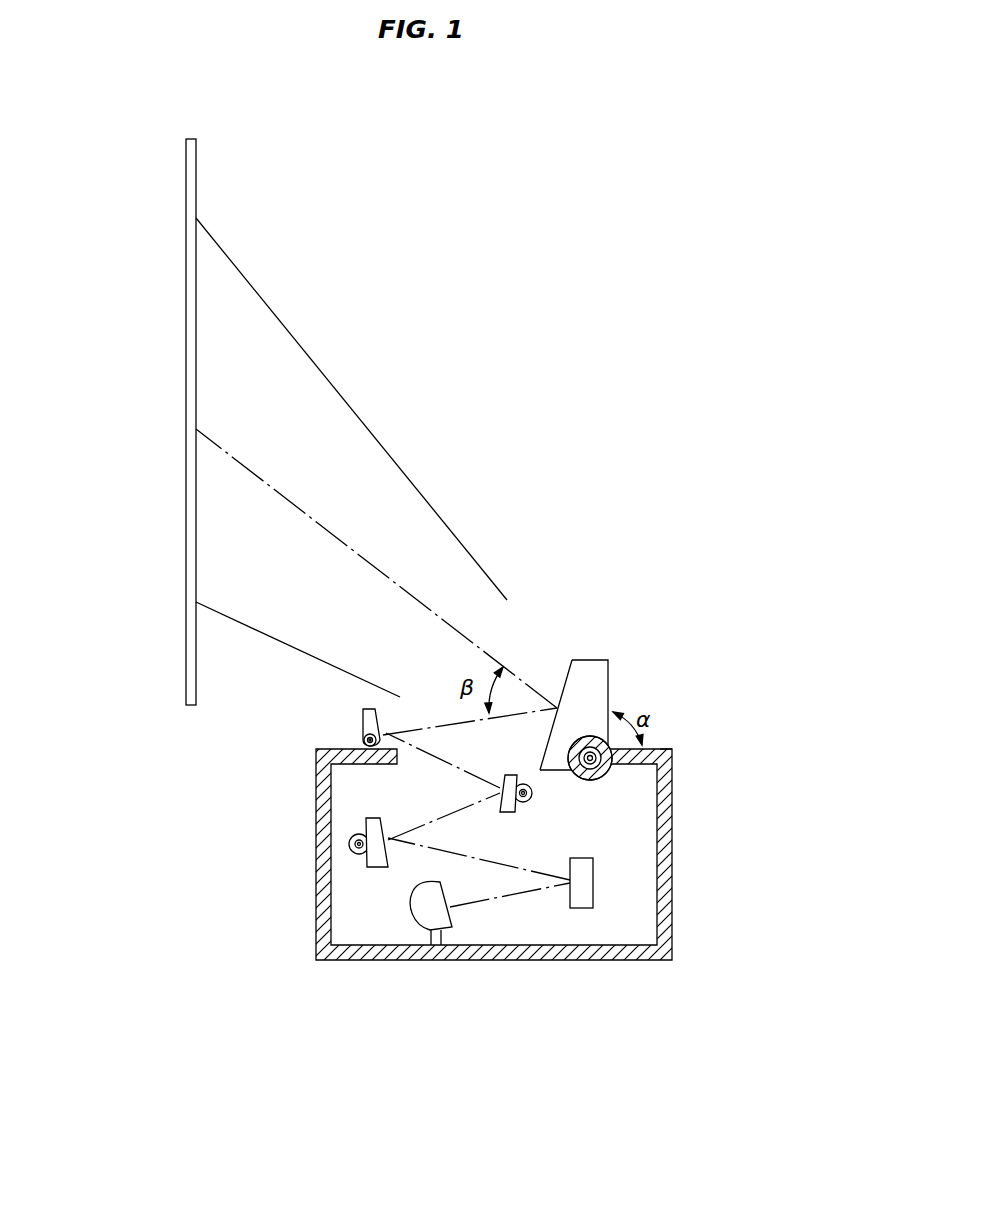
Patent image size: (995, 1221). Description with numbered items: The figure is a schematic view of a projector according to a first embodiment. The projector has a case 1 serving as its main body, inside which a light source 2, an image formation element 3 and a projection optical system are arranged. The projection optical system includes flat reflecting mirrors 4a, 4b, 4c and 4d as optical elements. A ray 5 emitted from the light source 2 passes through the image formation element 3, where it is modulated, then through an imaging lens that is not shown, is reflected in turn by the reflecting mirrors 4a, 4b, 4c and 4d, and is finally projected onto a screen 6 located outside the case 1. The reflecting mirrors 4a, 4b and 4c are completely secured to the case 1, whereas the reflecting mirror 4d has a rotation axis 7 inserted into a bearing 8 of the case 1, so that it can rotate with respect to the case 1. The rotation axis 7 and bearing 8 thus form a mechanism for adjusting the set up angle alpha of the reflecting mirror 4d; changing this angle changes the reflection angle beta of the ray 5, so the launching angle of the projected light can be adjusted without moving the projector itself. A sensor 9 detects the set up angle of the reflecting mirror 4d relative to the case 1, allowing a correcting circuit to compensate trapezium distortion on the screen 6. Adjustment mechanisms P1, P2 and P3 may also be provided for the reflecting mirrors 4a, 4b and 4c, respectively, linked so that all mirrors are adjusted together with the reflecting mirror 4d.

The case 1 is at (671, 946).
The light source 2 is at (423, 928).
The image formation element 3 is at (580, 910).
The reflecting mirror 4a is at (366, 864).
The reflecting mirror 4b is at (500, 789).
The reflecting mirror 4c is at (363, 712).
The reflecting mirror 4d is at (608, 693).
The ray 5 is at (488, 903).
The screen 6 is at (196, 167).
The rotation axis 7 is at (602, 772).
The bearing 8 is at (586, 780).
The sensor 9 is at (667, 753).
The adjustment mechanism P1 is at (349, 846).
The adjustment mechanism P2 is at (526, 802).
The adjustment mechanism P3 is at (363, 739).